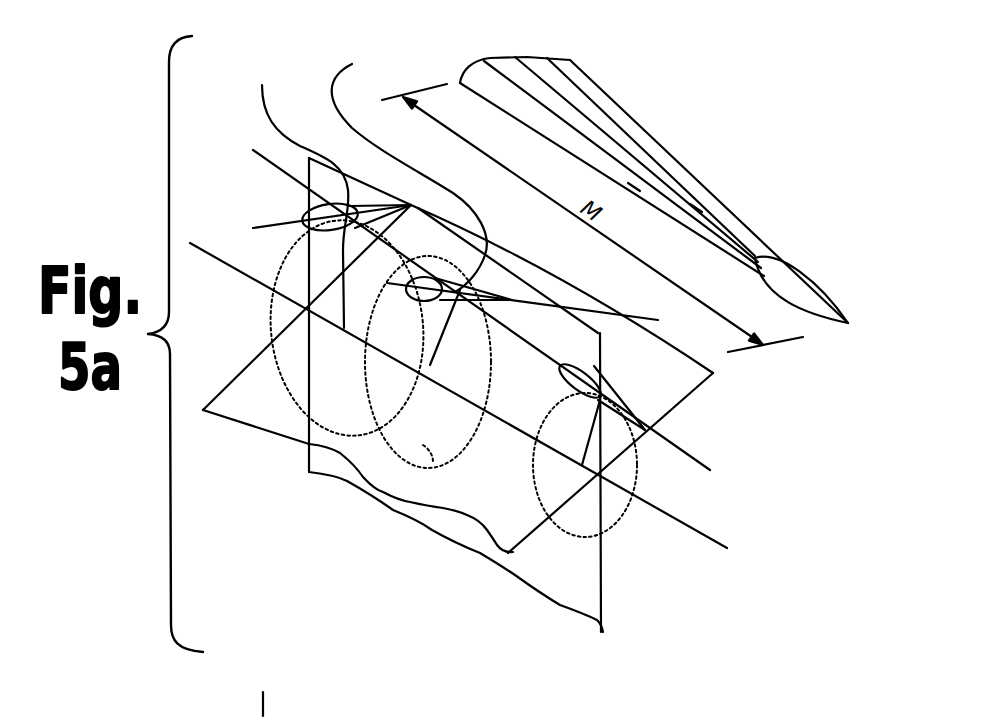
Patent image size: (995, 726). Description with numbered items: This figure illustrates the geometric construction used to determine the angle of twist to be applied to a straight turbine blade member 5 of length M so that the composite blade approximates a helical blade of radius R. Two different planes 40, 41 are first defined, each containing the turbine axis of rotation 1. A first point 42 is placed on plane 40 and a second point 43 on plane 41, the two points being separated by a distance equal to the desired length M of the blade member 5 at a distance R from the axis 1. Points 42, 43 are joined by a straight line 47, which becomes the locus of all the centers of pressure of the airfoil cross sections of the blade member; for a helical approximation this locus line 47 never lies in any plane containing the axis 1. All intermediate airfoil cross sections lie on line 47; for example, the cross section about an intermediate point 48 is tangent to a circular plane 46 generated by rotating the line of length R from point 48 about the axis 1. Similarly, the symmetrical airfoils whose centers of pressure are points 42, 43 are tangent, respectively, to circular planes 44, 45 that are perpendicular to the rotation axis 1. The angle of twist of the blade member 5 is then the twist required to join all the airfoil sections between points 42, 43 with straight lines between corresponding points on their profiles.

The turbine axis of rotation 1 is at (693, 526).
The turbine blade member 5 is at (657, 150).
The first plane 40 is at (577, 583).
The second plane 41 is at (679, 385).
The first endpoint 42 is at (330, 193).
The second endpoint 43 is at (610, 393).
The first circular plane 44 is at (270, 332).
The second circular plane 45 is at (622, 524).
The intermediate circular plane 46 is at (433, 463).
The locus line 47 is at (277, 168).
The intermediate point 48 is at (495, 336).